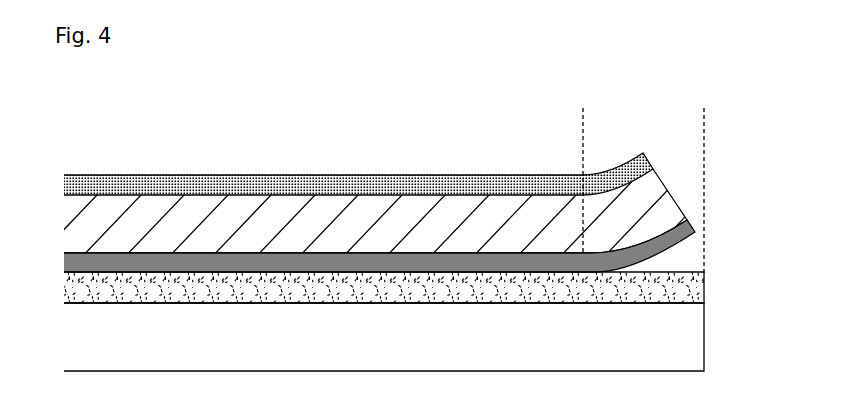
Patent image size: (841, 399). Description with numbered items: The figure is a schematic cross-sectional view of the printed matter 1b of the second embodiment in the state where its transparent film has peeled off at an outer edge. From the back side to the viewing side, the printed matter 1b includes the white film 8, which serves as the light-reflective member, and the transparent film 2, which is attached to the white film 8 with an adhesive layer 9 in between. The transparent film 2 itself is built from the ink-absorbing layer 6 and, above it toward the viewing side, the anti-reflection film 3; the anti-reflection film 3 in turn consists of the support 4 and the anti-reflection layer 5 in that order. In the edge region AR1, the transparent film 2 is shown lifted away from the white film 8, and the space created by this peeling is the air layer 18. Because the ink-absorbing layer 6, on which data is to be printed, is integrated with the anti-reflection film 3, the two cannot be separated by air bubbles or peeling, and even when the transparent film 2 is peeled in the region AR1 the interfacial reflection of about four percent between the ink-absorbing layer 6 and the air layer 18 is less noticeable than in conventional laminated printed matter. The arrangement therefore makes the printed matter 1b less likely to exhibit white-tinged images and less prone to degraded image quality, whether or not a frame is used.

The printed matter 1b is at (85, 134).
The region AR1 is at (704, 118).
The transparent film 2 is at (787, 137).
The anti-reflection film 3 is at (755, 137).
The support 4 is at (667, 208).
The anti-reflection layer 5 is at (662, 163).
The ink-absorbing layer 6 is at (683, 232).
The air layer 18 is at (680, 262).
The adhesive layer 9 is at (697, 286).
The white film 8 is at (698, 337).